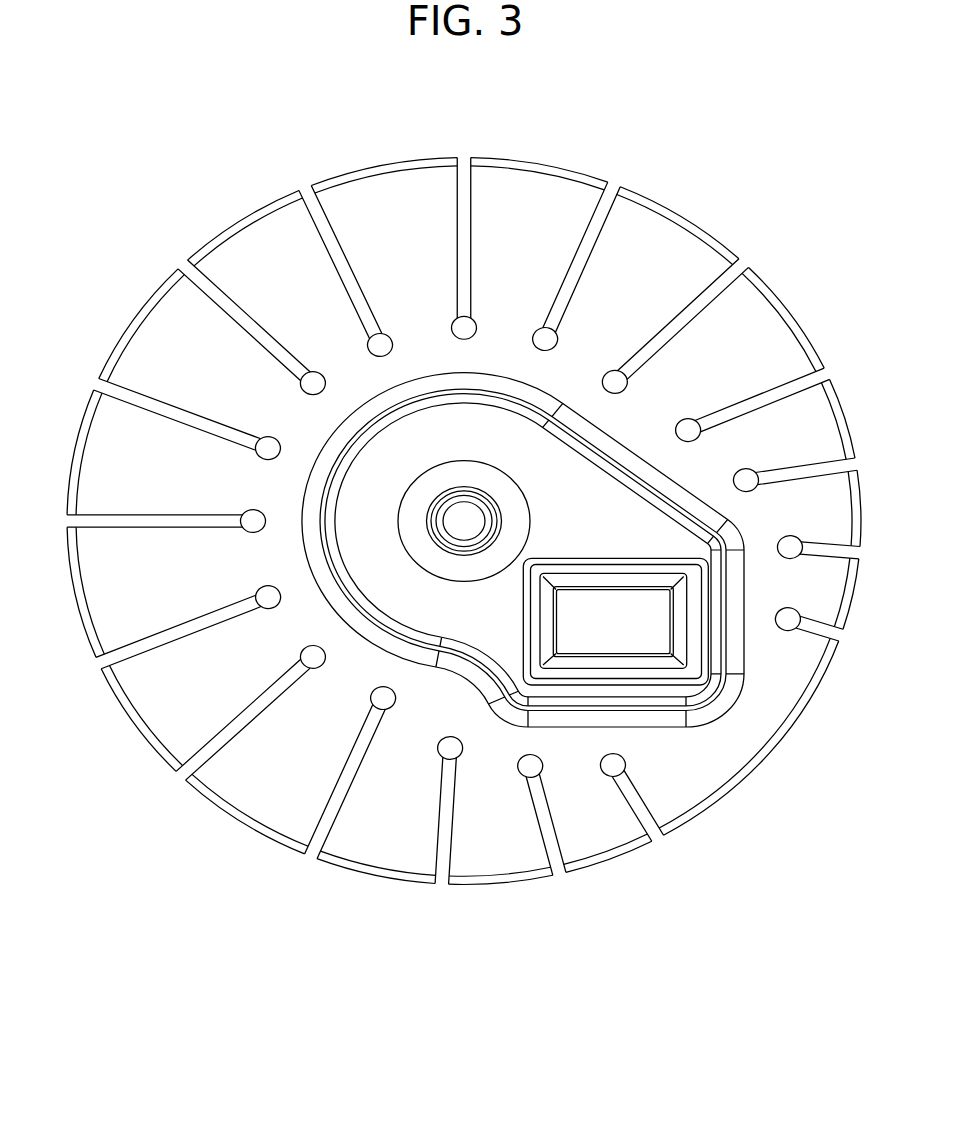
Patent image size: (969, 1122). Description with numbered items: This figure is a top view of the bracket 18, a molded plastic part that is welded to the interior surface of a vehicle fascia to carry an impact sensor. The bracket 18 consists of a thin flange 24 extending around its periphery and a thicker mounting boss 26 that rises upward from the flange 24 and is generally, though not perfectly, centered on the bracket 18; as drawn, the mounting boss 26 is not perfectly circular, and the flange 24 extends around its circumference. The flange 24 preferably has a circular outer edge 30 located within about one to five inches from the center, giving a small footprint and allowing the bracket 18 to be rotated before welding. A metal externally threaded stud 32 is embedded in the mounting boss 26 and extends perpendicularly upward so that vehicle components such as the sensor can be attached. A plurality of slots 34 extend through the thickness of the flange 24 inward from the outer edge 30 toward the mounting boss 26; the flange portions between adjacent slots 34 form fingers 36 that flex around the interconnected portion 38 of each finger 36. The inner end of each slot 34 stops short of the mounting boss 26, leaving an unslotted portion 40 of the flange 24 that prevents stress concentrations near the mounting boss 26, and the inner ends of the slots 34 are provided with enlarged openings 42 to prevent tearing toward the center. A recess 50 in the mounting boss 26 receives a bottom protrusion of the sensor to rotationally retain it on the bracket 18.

The bracket 18 is at (284, 112).
The flange 24 is at (507, 158).
The mounting boss 26 is at (545, 408).
The outer edge 30 is at (771, 287).
The stud 32 is at (490, 514).
The slots 34 is at (327, 237).
The fingers 36 is at (182, 350).
The interconnected portion 38 is at (500, 337).
The unslotted portion 40 is at (400, 364).
The enlarged openings 42 is at (268, 460).
The recess 50 is at (633, 627).